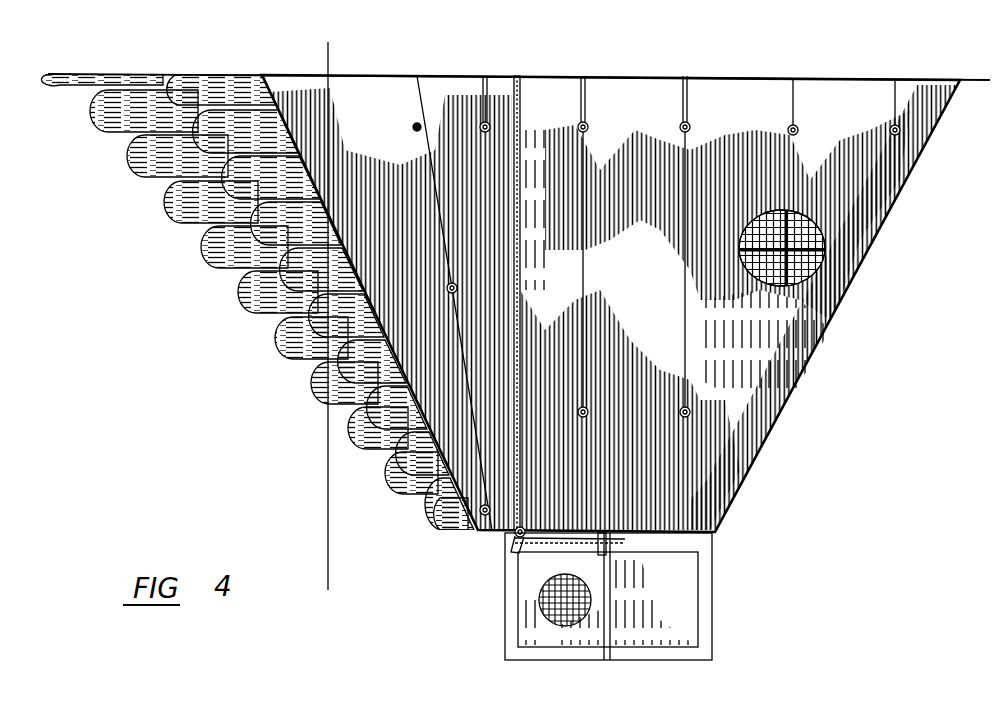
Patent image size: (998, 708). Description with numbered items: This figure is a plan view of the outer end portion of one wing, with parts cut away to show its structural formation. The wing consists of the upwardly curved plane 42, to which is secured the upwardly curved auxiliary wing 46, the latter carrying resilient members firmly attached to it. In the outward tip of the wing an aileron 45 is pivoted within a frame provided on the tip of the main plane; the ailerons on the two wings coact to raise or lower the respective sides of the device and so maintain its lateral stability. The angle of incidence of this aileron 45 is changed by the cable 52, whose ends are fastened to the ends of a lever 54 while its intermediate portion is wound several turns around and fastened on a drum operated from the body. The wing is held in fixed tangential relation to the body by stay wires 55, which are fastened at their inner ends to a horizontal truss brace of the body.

The upwardly curved plane 42 is at (458, 88).
The aileron 45 is at (608, 596).
The upwardly curved auxiliary wing 46 is at (360, 87).
The cable 52 is at (519, 286).
The lever 54 is at (618, 546).
The stay wires 55 is at (483, 108).